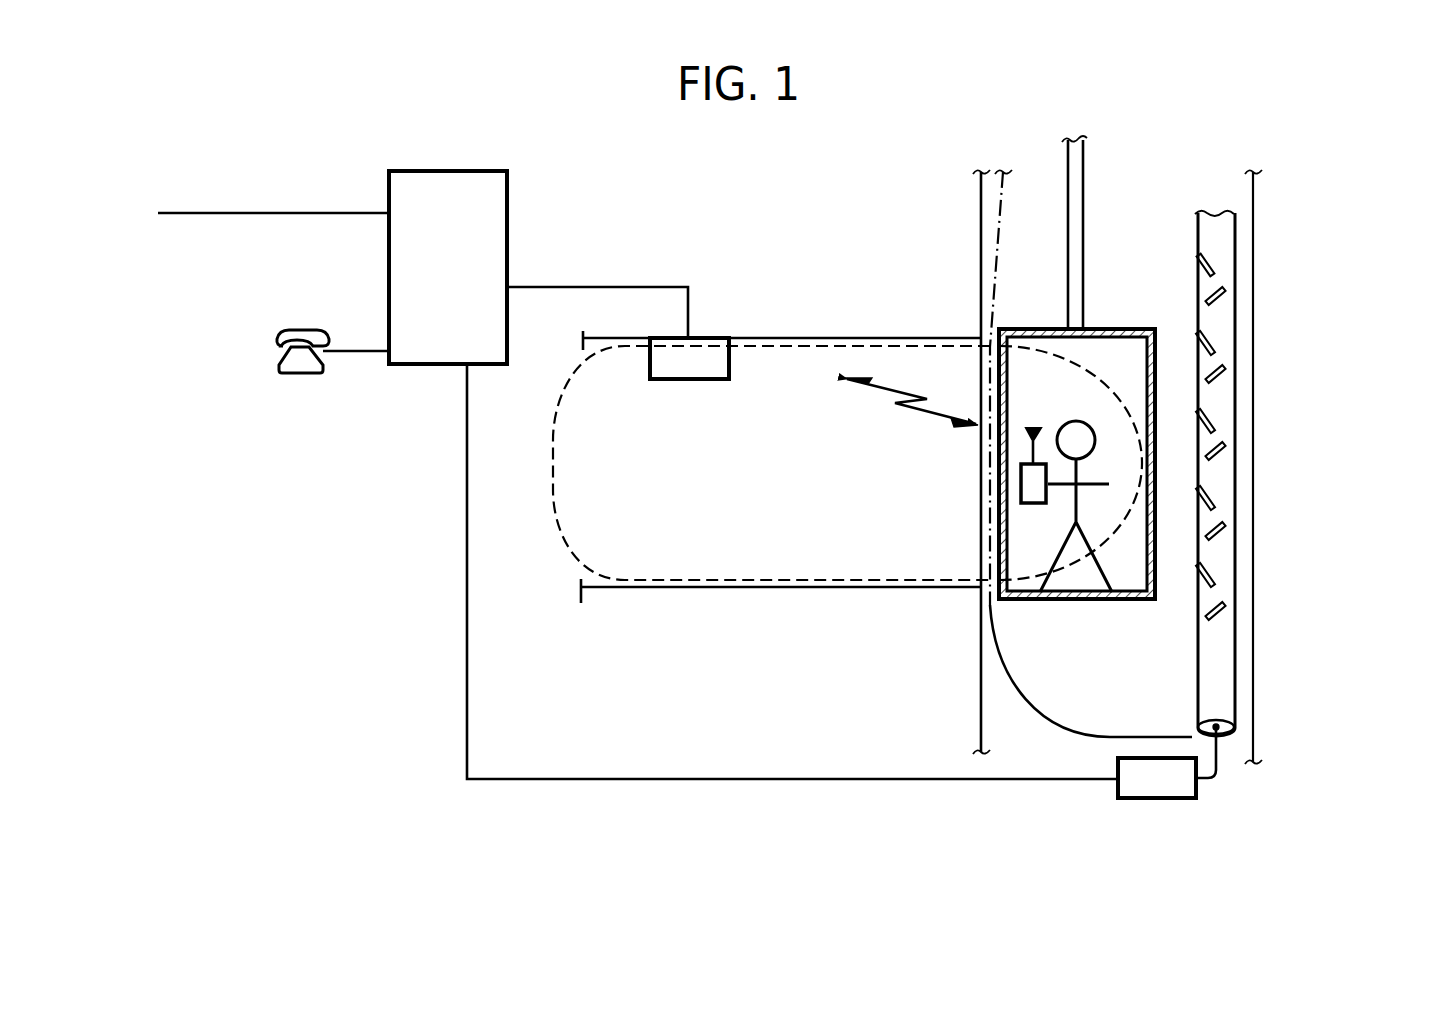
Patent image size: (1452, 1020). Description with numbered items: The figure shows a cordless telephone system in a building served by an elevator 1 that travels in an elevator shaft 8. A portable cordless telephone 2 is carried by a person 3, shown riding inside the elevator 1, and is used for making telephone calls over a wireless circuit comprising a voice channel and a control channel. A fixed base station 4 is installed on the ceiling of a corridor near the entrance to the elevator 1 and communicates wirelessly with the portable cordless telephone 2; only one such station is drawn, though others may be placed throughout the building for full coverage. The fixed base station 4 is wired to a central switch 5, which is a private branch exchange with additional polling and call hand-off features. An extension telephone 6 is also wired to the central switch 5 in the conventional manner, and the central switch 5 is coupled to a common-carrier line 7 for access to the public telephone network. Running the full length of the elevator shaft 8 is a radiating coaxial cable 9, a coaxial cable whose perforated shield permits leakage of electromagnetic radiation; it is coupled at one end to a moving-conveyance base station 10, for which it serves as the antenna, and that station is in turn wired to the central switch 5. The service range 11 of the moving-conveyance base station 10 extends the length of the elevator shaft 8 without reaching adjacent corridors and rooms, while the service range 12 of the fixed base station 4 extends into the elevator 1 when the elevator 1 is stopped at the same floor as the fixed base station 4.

The elevator 1 is at (1123, 330).
The portable cordless telephone 2 is at (1037, 420).
The person 3 is at (1086, 428).
The fixed base station 4 is at (711, 380).
The central switch 5 is at (507, 181).
The extension telephone 6 is at (318, 330).
The common-carrier line 7 is at (244, 212).
The elevator shaft 8 is at (1251, 482).
The radiating coaxial cable 9 is at (1196, 238).
The moving-conveyance base station 10 is at (1197, 796).
The service range of the moving-conveyance base station 11 is at (1027, 700).
The service range of the fixed base station 12 is at (552, 472).